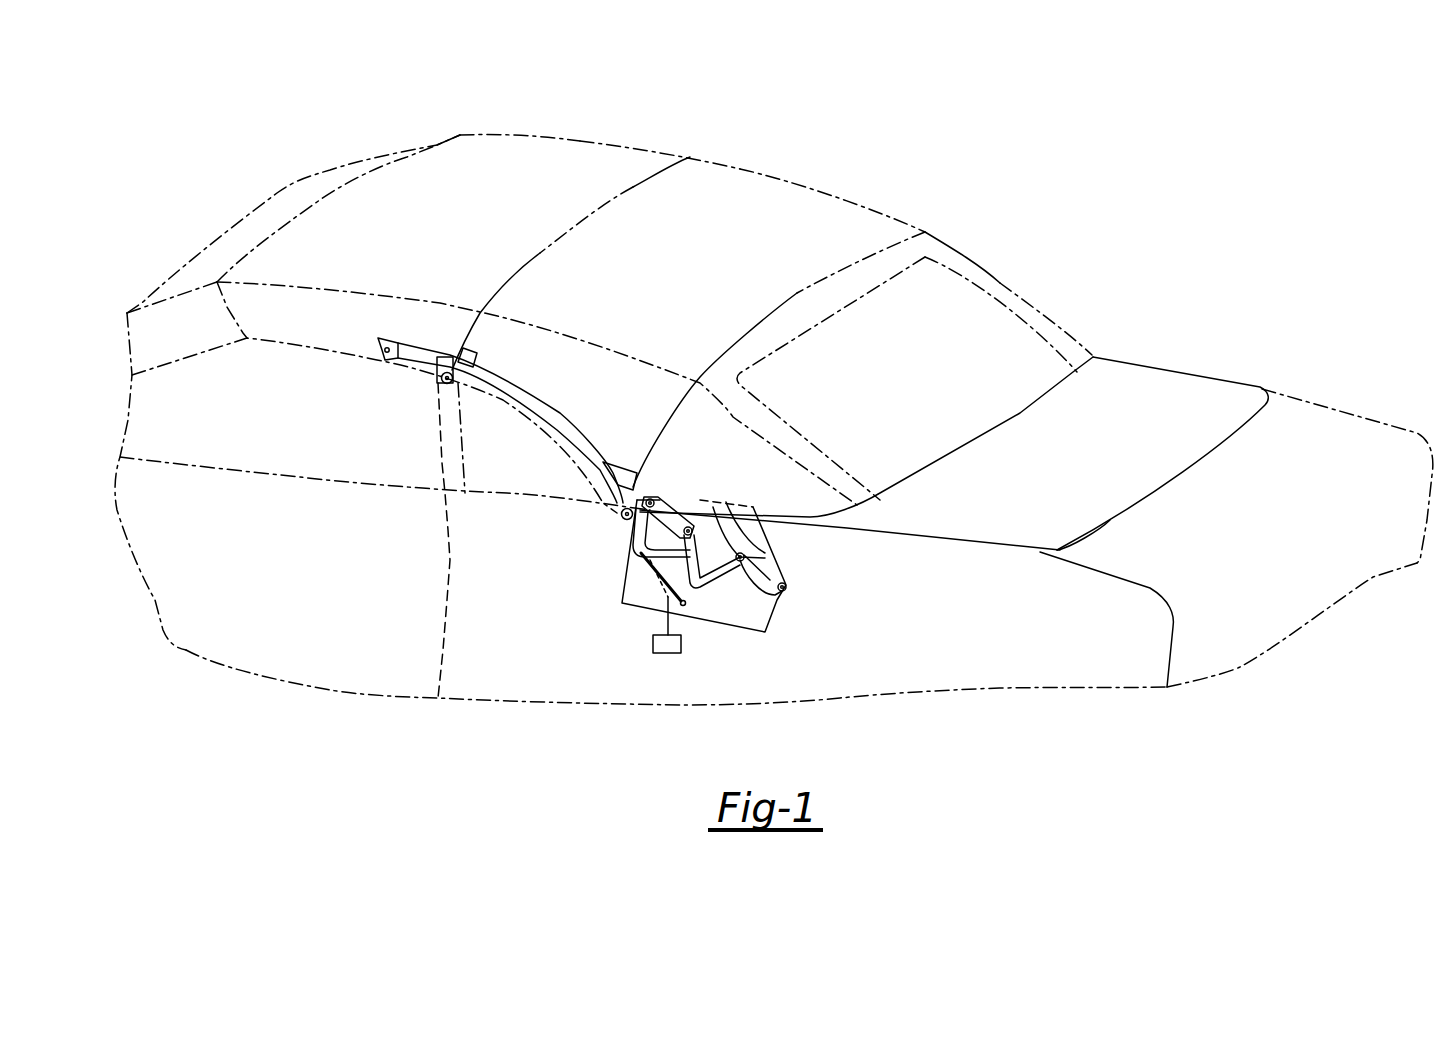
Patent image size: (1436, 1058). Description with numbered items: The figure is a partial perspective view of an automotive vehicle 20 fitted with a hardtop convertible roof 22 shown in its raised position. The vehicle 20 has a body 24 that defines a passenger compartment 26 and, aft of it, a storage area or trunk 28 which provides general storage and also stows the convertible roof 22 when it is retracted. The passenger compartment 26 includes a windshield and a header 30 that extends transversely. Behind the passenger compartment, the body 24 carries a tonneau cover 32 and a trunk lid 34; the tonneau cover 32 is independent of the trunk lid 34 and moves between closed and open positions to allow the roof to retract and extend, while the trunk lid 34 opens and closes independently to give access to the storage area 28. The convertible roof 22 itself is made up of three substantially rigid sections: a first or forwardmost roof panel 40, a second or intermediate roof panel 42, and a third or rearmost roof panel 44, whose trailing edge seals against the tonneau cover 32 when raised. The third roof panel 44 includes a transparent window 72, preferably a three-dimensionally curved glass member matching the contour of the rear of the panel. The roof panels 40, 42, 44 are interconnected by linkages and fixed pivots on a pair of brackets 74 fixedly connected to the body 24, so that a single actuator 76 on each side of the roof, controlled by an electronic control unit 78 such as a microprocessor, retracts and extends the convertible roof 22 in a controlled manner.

The automotive vehicle 20 is at (1097, 670).
The hardtop convertible roof 22 is at (804, 163).
The body 24 is at (500, 657).
The passenger compartment 26 is at (365, 450).
The storage area or trunk 28 is at (1028, 589).
The header 30 is at (238, 237).
The tonneau cover 32 is at (1157, 388).
The trunk lid 34 is at (1297, 420).
The first or forwardmost roof panel 40 is at (515, 156).
The second or intermediate roof panel 42 is at (707, 192).
The third or rearmost roof panel 44 is at (953, 252).
The transparent window 72 is at (990, 318).
The brackets 74 is at (737, 615).
The actuator 76 is at (632, 562).
The electronic control unit 78 is at (670, 653).